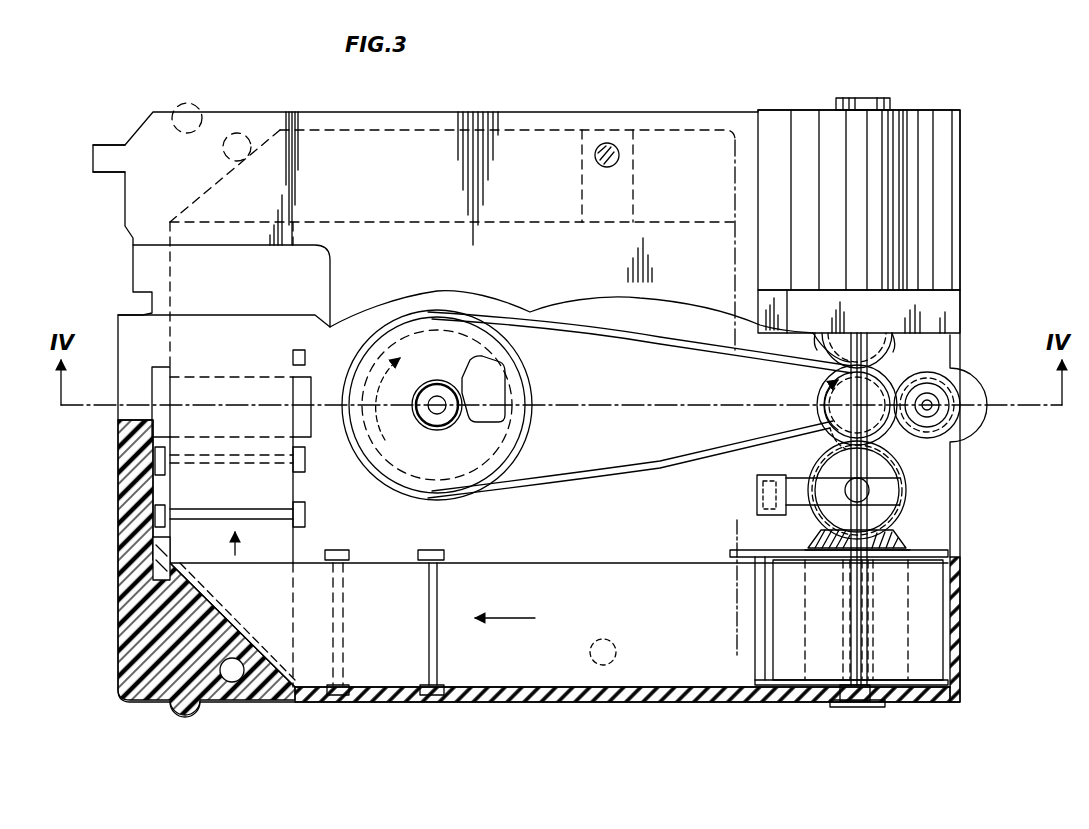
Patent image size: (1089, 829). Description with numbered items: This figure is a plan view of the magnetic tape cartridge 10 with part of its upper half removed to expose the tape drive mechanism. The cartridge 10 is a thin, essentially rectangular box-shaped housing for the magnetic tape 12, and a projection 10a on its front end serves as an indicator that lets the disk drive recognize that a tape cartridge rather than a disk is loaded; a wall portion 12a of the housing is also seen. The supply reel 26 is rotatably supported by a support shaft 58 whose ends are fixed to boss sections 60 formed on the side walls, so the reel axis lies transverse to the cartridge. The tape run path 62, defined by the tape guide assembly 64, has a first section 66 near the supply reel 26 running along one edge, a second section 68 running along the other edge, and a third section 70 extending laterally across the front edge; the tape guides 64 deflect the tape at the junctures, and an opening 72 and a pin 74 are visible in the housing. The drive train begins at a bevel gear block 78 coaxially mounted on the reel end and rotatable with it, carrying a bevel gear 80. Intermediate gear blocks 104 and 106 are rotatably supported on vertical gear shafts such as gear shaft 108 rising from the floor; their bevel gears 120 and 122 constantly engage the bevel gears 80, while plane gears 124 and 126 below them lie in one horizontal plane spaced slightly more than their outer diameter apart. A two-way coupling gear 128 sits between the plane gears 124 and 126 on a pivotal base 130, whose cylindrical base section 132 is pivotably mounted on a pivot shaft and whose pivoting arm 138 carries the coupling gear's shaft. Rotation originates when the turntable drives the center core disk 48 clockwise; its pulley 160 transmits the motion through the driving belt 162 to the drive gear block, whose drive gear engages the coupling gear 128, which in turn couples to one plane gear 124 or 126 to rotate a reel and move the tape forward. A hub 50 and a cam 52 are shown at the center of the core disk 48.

The magnetic tape cartridge 10 is at (553, 108).
The projection 10a is at (103, 153).
The magnetic tape 12 is at (459, 668).
The housing cover wall 12a is at (638, 192).
The supply reel 26 is at (925, 665).
The center core disk 48 is at (445, 322).
The pulley hub 50 is at (433, 390).
The cam 52 is at (482, 368).
The support shaft 58 is at (898, 461).
The boss section 60 is at (864, 98).
The tape run path 62 is at (520, 658).
The tape guide assembly 64 is at (160, 548).
The first section 66 is at (668, 668).
The second section 68 is at (410, 148).
The third section 70 is at (150, 480).
The mounting hole 72 is at (600, 665).
The pivot pin 74 is at (608, 148).
The bevel gear block 78 is at (918, 543).
The bevel gear 80 is at (905, 532).
The intermediate gear block 104 is at (905, 483).
The intermediate gear block 106 is at (905, 350).
The gear shaft 108 is at (805, 520).
The bevel gear 120 is at (760, 590).
The bevel gear 122 is at (895, 338).
The plane gear 124 is at (835, 458).
The plane gear 126 is at (830, 362).
The two-way coupling gear 128 is at (900, 357).
The pivotal base 130 is at (820, 432).
The cylindrical base section 132 is at (943, 397).
The pivoting arm 138 is at (905, 444).
The pulley 160 is at (533, 402).
The driving belt 162 is at (573, 477).